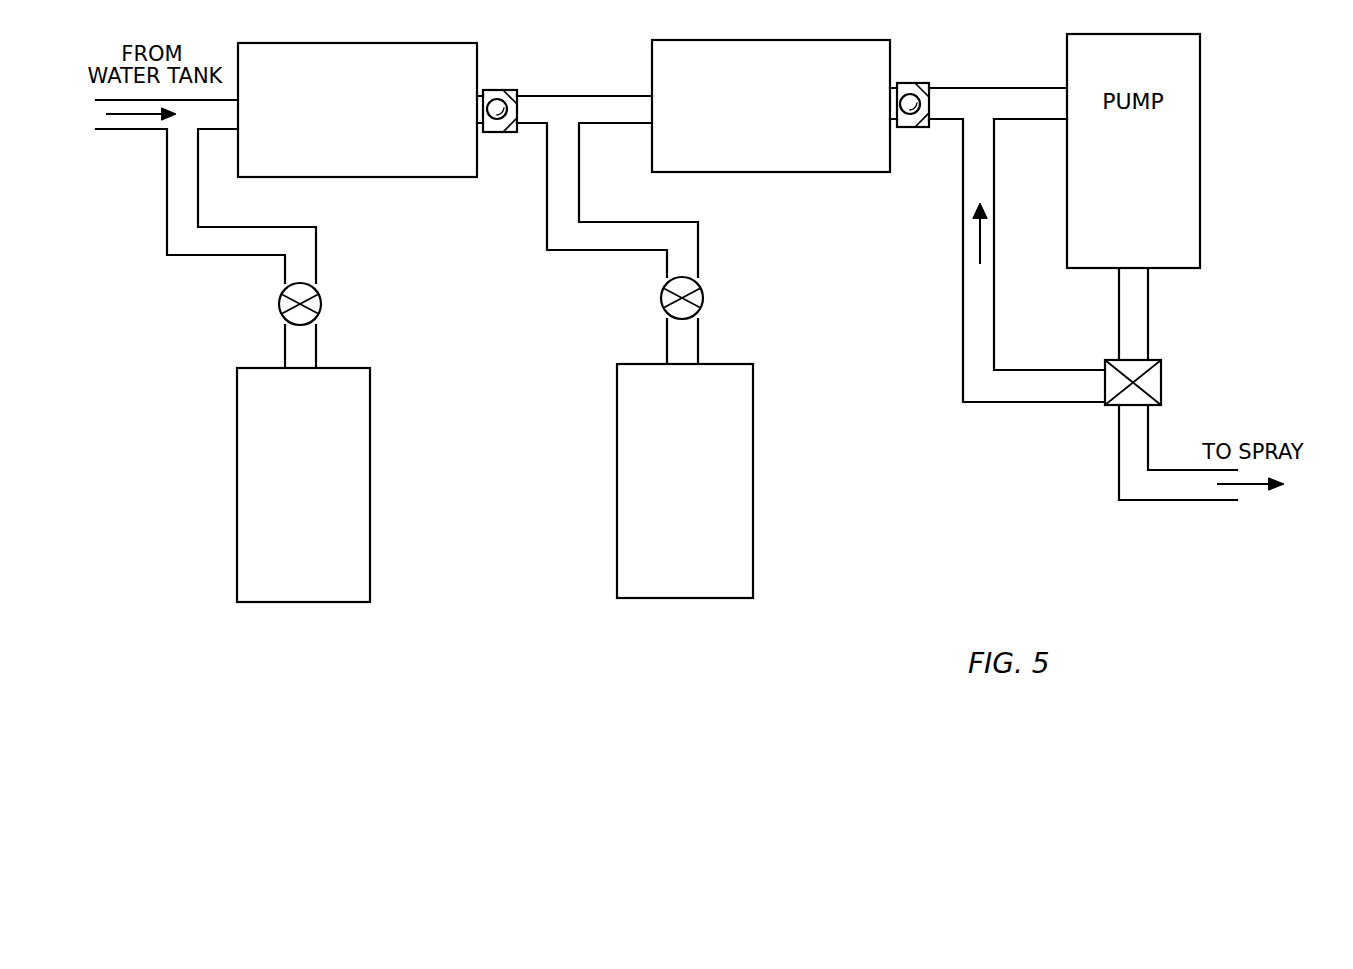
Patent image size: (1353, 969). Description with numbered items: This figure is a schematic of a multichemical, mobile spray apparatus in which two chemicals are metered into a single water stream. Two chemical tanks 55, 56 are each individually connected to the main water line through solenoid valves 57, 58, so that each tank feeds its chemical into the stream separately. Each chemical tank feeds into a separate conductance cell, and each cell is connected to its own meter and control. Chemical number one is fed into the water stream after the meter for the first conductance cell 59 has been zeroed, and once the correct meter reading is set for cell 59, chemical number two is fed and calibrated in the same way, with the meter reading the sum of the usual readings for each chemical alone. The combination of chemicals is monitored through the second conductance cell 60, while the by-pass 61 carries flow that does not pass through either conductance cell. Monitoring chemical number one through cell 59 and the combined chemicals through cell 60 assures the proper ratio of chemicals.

The chemical tank 55 is at (373, 507).
The chemical tank 56 is at (756, 497).
The solenoid valve 57 is at (323, 303).
The solenoid valve 58 is at (705, 297).
The conductance cell 59 is at (349, 52).
The conductance cell 60 is at (753, 48).
The by-pass 61 is at (963, 281).